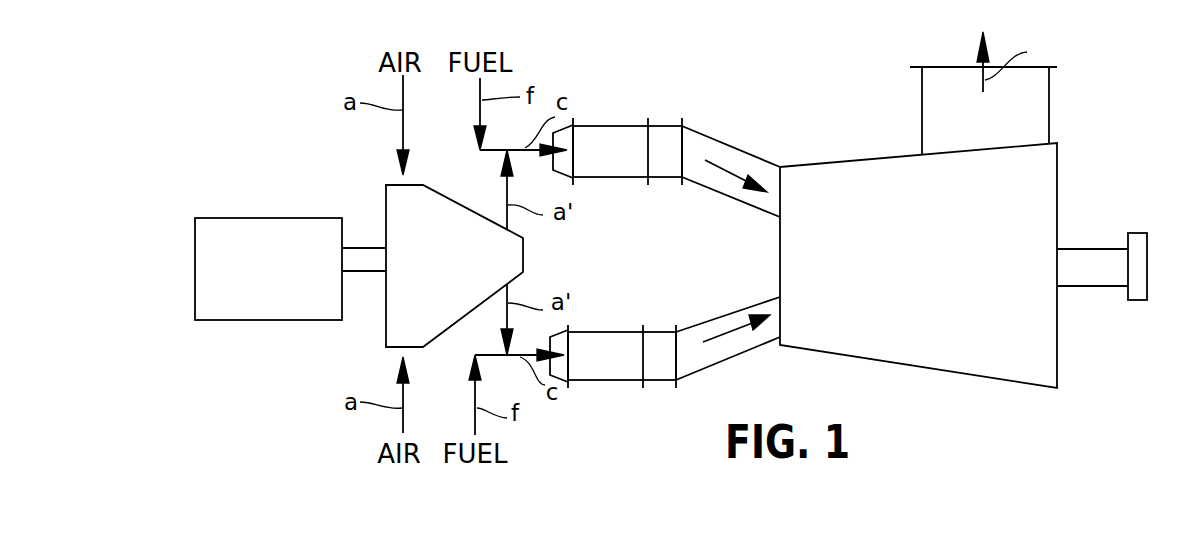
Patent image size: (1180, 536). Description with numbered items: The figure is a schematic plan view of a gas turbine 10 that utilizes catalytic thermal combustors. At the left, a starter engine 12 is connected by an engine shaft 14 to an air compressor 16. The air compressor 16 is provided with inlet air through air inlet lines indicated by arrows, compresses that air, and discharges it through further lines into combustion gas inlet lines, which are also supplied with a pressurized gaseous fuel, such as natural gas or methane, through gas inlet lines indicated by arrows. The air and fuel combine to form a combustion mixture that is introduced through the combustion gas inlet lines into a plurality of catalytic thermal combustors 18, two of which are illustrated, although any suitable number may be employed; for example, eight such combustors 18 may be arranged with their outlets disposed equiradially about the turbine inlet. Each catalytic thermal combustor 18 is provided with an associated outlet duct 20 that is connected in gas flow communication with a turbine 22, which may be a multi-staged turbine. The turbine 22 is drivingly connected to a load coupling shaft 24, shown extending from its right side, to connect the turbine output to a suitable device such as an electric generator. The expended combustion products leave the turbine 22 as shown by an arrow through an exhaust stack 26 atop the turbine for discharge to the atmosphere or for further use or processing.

The gas turbine 10 is at (784, 118).
The starter engine 12 is at (277, 279).
The engine shaft 14 is at (358, 257).
The air compressor 16 is at (425, 279).
The catalytic thermal combustor 18 is at (613, 126).
The outlet duct 20 is at (722, 197).
The turbine 22 is at (930, 266).
The load coupling shaft 24 is at (1090, 277).
The exhaust stack 26 is at (1050, 100).